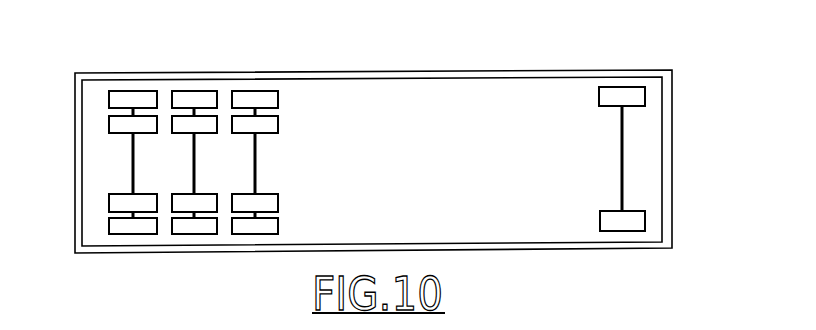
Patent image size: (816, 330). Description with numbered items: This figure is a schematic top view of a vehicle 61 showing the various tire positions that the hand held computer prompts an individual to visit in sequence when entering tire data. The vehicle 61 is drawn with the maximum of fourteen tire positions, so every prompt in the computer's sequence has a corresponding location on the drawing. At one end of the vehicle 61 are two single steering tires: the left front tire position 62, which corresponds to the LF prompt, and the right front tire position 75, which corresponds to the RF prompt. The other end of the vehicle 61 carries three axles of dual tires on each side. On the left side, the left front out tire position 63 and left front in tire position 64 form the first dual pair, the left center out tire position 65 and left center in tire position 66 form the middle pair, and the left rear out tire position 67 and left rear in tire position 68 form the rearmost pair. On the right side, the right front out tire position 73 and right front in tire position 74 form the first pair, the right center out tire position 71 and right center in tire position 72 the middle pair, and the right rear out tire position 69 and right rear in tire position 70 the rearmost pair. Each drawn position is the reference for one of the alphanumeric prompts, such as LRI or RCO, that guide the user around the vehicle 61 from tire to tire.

The vehicle 61 is at (677, 66).
The left front tire position 62 is at (630, 97).
The left front out tire position 63 is at (263, 100).
The left front in tire position 64 is at (278, 125).
The left center out tire position 65 is at (195, 95).
The left center in tire position 66 is at (220, 121).
The left rear out tire position 67 is at (133, 95).
The left rear in tire position 68 is at (110, 122).
The right rear out tire position 69 is at (110, 233).
The right rear in tire position 70 is at (110, 203).
The right center out tire position 71 is at (198, 232).
The right center in tire position 72 is at (170, 206).
The right front out tire position 73 is at (250, 230).
The right front in tire position 74 is at (238, 200).
The right front tire position 75 is at (622, 224).